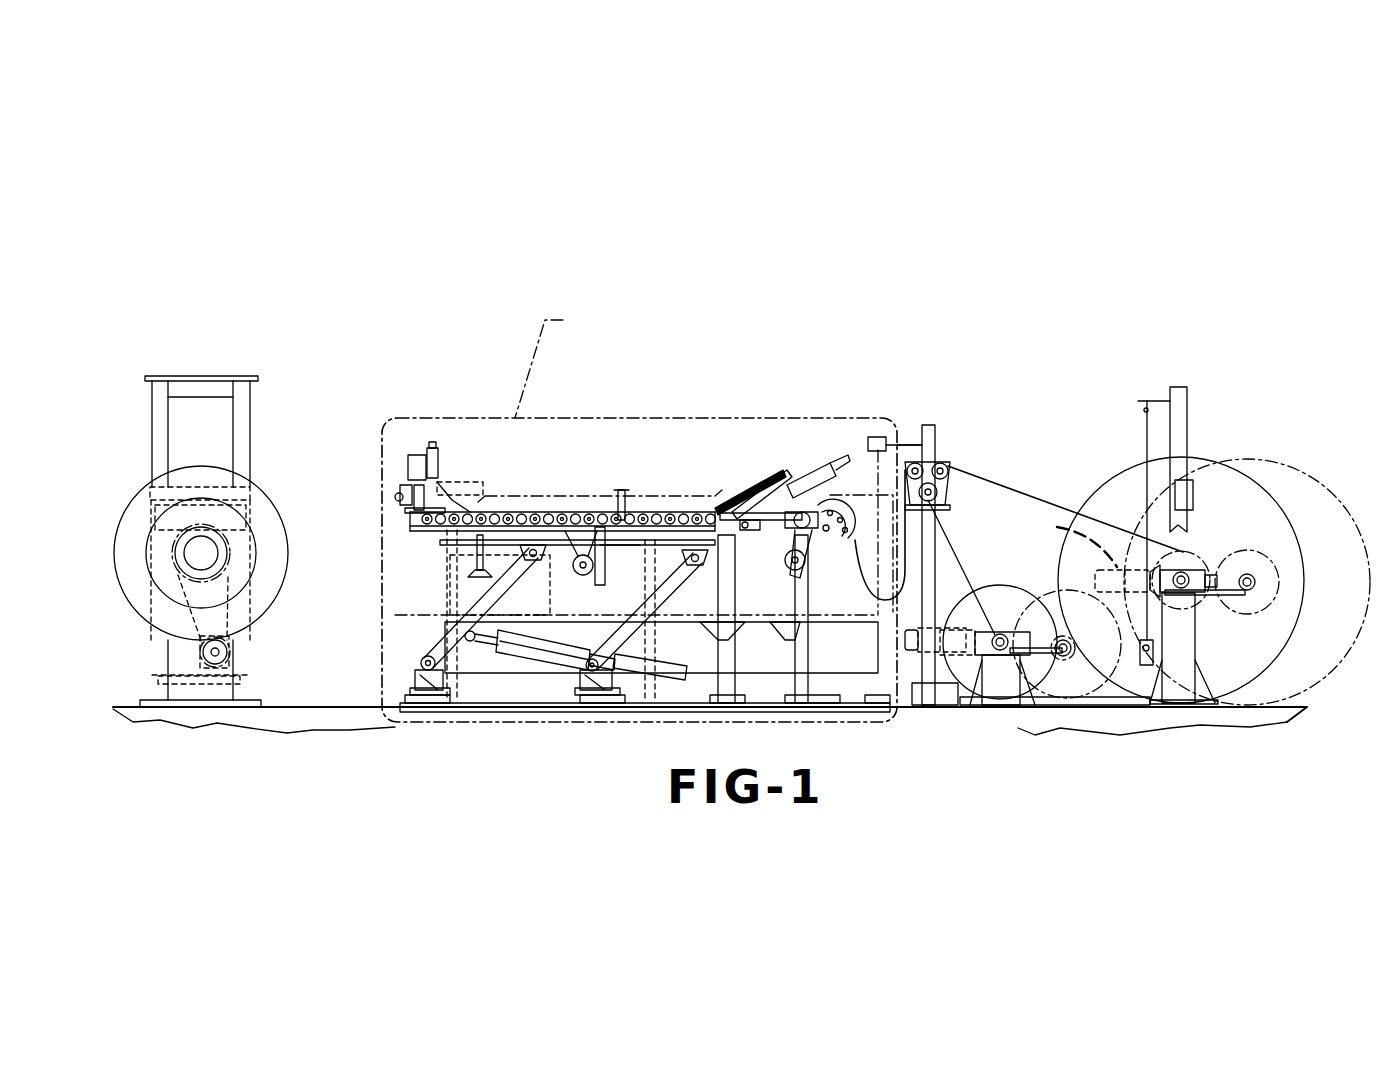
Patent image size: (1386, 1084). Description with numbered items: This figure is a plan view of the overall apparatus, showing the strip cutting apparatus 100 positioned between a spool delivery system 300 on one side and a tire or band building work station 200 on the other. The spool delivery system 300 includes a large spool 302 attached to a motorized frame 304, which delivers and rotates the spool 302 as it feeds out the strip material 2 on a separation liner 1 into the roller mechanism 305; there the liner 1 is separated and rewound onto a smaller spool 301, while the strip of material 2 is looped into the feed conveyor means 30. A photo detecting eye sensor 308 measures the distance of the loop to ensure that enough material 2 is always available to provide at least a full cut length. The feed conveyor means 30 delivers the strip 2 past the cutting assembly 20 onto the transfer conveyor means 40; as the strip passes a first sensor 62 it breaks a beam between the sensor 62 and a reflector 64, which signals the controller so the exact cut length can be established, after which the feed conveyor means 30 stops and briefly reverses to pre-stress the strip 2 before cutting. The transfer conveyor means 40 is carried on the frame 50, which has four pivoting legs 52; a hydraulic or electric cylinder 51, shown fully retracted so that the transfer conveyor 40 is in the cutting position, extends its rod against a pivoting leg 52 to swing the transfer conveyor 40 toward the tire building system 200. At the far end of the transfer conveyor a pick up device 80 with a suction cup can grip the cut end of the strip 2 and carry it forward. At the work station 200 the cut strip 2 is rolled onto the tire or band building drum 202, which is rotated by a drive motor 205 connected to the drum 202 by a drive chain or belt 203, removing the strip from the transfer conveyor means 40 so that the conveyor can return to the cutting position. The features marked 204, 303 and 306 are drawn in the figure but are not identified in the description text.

The separation liner 1 is at (967, 583).
The strip material 2 is at (855, 586).
The cutting assembly 20 is at (764, 462).
The feed conveyor means 30 is at (803, 533).
The transfer conveyor means 40 is at (547, 505).
The frame 50 is at (405, 660).
The cylinder 51 is at (555, 660).
The pivoting legs 52 is at (480, 600).
The first sensor 62 is at (626, 490).
The reflector 64 is at (620, 513).
The pick up device 80 is at (446, 472).
The strip cutting apparatus 100 is at (701, 446).
The tire or band building work station 200 is at (268, 493).
The tire or band building drum 202 is at (293, 562).
The drive chain or belt 203 is at (232, 608).
The take-up stand 204 is at (246, 383).
The drive motor 205 is at (210, 660).
The spool delivery system 300 is at (1122, 456).
The smaller spool 301 is at (1040, 680).
The large spool 302 is at (1092, 493).
The post 303 is at (920, 650).
The motorized frame 304 is at (1178, 387).
The roller mechanism 305 is at (936, 463).
The drive 306 is at (1057, 527).
The photo detecting eye sensor 308 is at (872, 437).